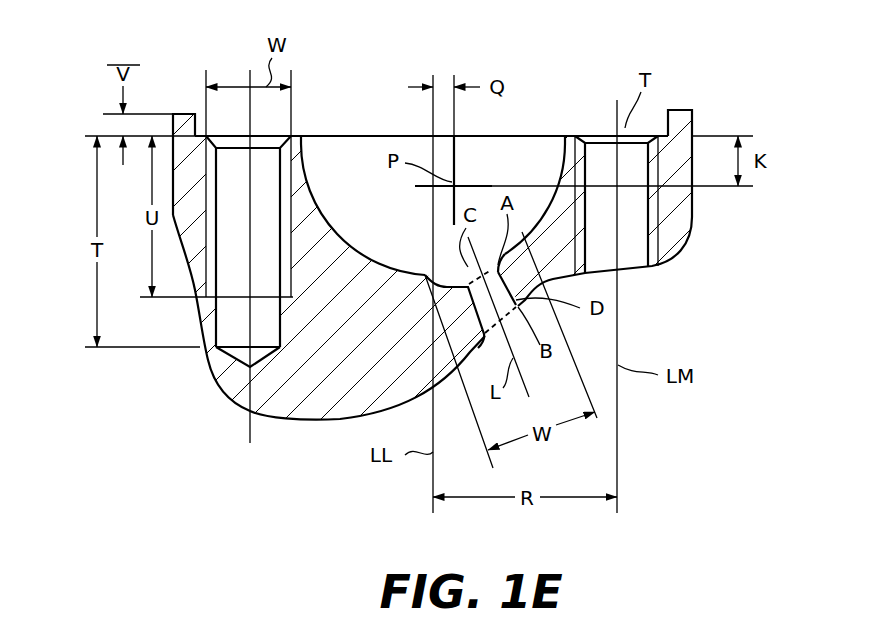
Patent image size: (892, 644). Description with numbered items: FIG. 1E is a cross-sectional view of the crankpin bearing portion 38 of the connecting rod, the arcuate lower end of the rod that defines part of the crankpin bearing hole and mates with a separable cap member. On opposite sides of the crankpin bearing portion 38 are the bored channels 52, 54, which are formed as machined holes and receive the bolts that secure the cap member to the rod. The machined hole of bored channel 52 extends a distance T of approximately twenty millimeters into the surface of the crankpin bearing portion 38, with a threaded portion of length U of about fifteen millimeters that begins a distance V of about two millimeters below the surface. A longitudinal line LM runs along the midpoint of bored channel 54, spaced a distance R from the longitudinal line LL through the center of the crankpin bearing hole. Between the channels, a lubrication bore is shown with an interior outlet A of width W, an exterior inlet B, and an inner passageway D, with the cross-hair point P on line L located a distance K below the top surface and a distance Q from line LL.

The crankpin bearing portion 38 is at (333, 410).
The bored channel 52 is at (222, 217).
The bored channel 54 is at (638, 216).